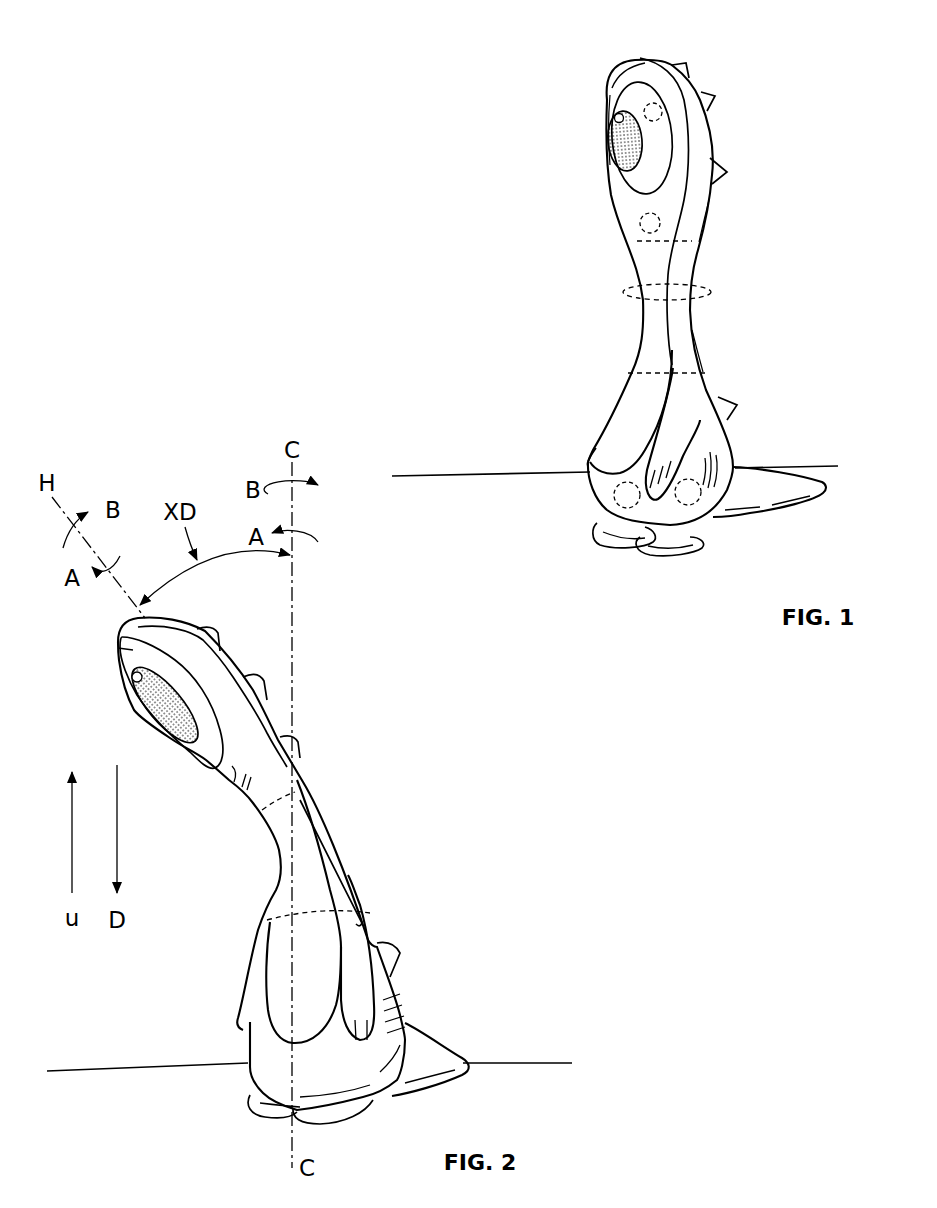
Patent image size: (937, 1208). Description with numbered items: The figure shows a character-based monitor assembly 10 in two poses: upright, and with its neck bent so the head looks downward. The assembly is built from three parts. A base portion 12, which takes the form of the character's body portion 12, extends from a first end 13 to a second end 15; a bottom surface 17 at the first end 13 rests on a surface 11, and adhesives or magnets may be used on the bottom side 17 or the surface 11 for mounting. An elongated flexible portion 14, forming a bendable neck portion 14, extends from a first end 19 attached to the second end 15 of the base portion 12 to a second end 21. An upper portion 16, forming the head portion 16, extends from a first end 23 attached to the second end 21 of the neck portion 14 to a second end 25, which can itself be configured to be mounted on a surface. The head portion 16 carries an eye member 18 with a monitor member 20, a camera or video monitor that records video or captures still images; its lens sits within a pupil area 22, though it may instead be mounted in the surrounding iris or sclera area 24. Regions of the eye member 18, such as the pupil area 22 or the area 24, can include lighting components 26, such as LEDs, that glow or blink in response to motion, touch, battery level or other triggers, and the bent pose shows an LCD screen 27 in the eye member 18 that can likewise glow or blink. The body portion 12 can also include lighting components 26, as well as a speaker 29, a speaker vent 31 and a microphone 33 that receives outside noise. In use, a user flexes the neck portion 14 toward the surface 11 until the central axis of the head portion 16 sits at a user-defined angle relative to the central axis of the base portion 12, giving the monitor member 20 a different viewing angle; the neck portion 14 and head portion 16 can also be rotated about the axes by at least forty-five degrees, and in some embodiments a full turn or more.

In FIG. 1, the monitor assembly 10 is at (487, 71).
In FIG. 2, the monitor assembly 10 is at (97, 457).
In FIG. 1, the surface 11 is at (433, 524).
In FIG. 2, the surface 11 is at (131, 1107).
In FIG. 1, the base portion 12 is at (628, 412).
In FIG. 2, the base portion 12 is at (257, 993).
In FIG. 1, the first end 13 is at (578, 530).
In FIG. 1, the elongated flexible portion 14 is at (650, 293).
In FIG. 2, the elongated flexible portion 14 is at (285, 903).
In FIG. 1, the second end 15 is at (720, 373).
In FIG. 1, the upper portion 16 is at (700, 143).
In FIG. 2, the upper portion 16 is at (230, 772).
In FIG. 1, the bottom surface 17 is at (678, 571).
In FIG. 1, the eye member 18 is at (578, 132).
In FIG. 1, the first end 19 is at (719, 360).
In FIG. 1, the monitor member 20 is at (617, 115).
In FIG. 2, the monitor member 20 is at (132, 677).
In FIG. 1, the second end 21 is at (719, 243).
In FIG. 1, the pupil area 22 is at (612, 143).
In FIG. 1, the first end 23 is at (712, 226).
In FIG. 1, the area surrounding pupil area 24 is at (632, 88).
In FIG. 1, the second end 25 is at (601, 71).
In FIG. 1, the lighting component 26 is at (653, 103).
In FIG. 2, the LCD screen 27 is at (132, 650).
In FIG. 1, the speaker 29 is at (691, 495).
In FIG. 1, the speaker vent 31 is at (722, 465).
In FIG. 1, the microphone 33 is at (645, 223).